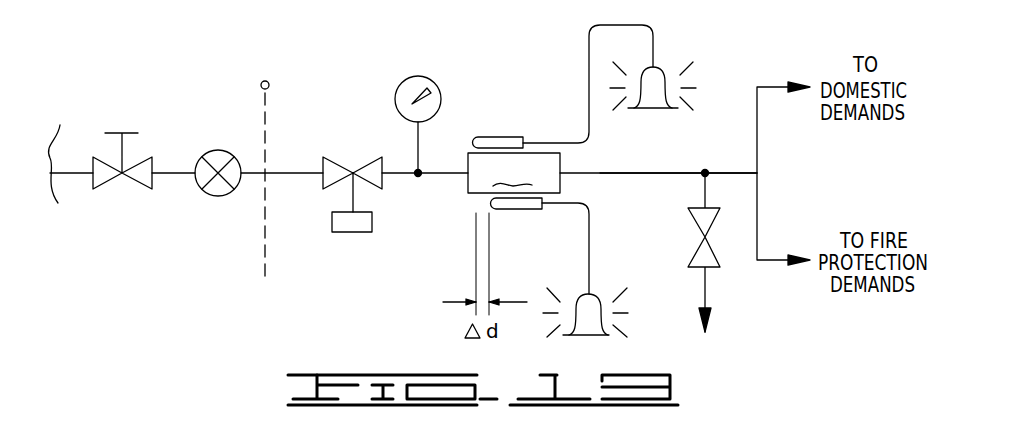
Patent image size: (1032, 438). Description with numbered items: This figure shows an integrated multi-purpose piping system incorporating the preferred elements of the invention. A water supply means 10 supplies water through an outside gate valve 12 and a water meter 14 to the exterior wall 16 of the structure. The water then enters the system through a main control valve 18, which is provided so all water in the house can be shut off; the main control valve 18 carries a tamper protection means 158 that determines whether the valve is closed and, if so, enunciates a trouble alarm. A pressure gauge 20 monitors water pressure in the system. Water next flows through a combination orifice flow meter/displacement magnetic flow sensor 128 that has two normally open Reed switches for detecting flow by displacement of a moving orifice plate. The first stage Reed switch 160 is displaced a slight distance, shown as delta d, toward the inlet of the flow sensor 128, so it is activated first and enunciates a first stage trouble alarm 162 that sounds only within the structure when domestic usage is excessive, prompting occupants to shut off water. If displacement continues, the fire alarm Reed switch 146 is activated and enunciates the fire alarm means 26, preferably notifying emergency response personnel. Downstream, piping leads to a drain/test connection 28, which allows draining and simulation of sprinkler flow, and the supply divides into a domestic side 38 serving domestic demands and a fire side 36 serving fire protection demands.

The water supply means 10 is at (60, 125).
The gate valve 12 is at (113, 181).
The water meter 14 is at (210, 196).
The exterior wall 16 is at (261, 85).
The main control valve 18 is at (340, 165).
The tamper protection means 158 is at (360, 233).
The pressure gauge 20 is at (403, 83).
The combination orifice flow meter/displacement magnetic flow sensor 128 is at (514, 173).
The first stage Reed switch 160 is at (487, 137).
The first stage trouble alarm 162 is at (662, 72).
The fire alarm Reed switch 146 is at (517, 210).
The fire alarm means 26 is at (595, 294).
The domestic side 38 is at (645, 172).
The drain/test connection 28 is at (692, 232).
The fire side 36 is at (765, 262).